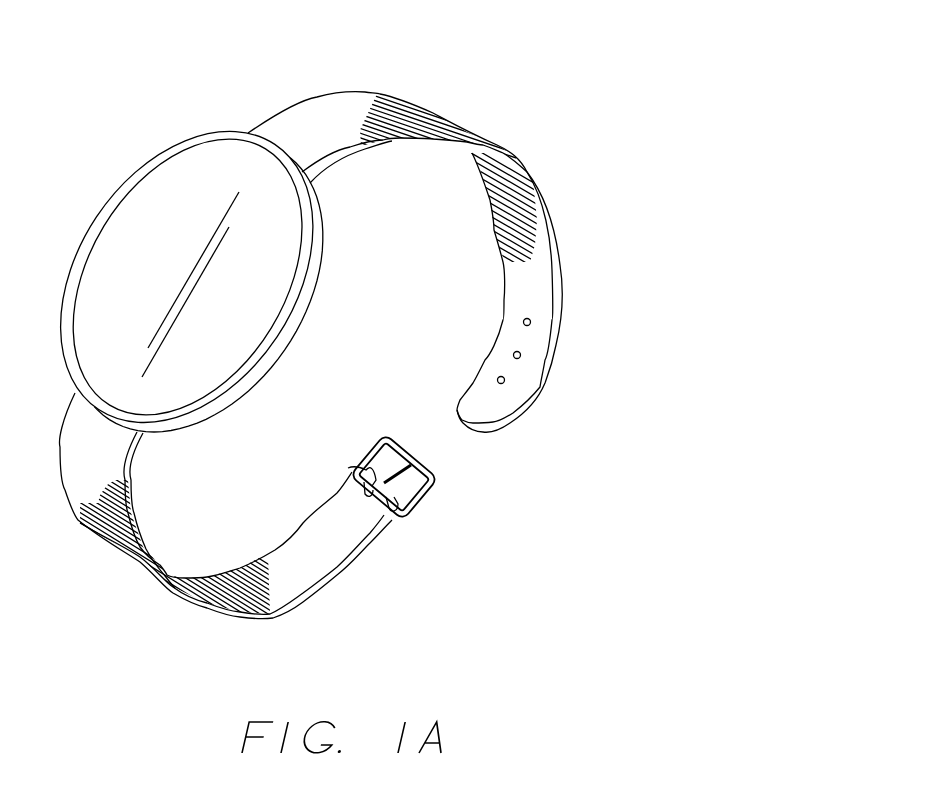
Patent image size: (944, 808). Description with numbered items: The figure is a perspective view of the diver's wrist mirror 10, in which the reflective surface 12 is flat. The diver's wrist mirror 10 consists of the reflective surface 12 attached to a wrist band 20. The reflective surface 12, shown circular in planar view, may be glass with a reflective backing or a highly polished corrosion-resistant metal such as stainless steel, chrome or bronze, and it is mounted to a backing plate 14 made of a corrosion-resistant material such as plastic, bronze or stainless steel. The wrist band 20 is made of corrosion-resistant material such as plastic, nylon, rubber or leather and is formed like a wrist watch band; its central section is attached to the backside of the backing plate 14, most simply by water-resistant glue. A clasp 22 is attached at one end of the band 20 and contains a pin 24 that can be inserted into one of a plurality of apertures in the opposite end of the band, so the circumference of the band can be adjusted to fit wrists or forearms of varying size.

The diver's wrist mirror 10 is at (201, 24).
The reflective surface 12 is at (152, 163).
The backing plate 14 is at (315, 282).
The wrist band 20 is at (513, 155).
The clasp 22 is at (445, 482).
The pin 24 is at (405, 473).